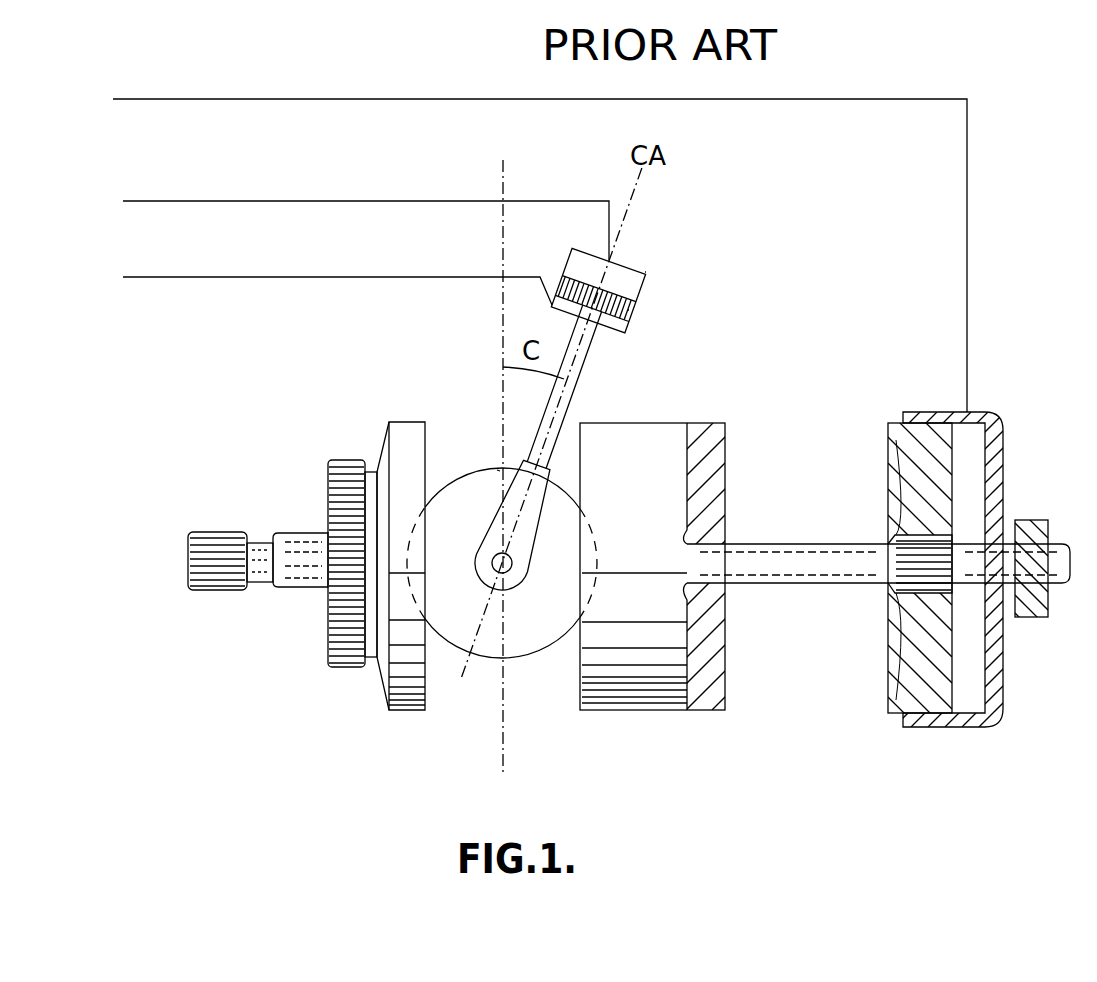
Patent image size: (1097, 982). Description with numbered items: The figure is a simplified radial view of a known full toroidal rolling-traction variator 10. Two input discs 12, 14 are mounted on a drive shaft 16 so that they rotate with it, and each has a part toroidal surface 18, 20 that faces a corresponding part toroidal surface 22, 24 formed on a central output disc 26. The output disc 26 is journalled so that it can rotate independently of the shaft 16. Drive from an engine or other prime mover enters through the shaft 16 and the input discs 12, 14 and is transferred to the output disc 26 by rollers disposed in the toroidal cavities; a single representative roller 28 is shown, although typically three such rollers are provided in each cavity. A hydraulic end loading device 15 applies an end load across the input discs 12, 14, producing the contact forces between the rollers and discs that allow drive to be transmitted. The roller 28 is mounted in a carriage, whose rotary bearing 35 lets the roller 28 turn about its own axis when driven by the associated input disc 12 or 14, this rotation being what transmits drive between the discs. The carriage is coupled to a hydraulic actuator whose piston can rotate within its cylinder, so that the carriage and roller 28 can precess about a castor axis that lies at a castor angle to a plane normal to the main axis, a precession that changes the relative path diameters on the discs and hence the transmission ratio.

The toroidal-race rolling-traction variator 10 is at (403, 734).
The input disc 12 is at (387, 445).
The input disc 14 is at (878, 712).
The hydraulic end loading device 15 is at (1012, 712).
The drive shaft 16 is at (297, 593).
The part toroidal surface 18 is at (404, 442).
The part toroidal surface 20 is at (902, 480).
The part toroidal surface 22 is at (603, 680).
The part toroidal surface 24 is at (713, 653).
The central output disc 26 is at (699, 578).
The roller 28 is at (480, 660).
The rotary bearing 35 is at (513, 565).